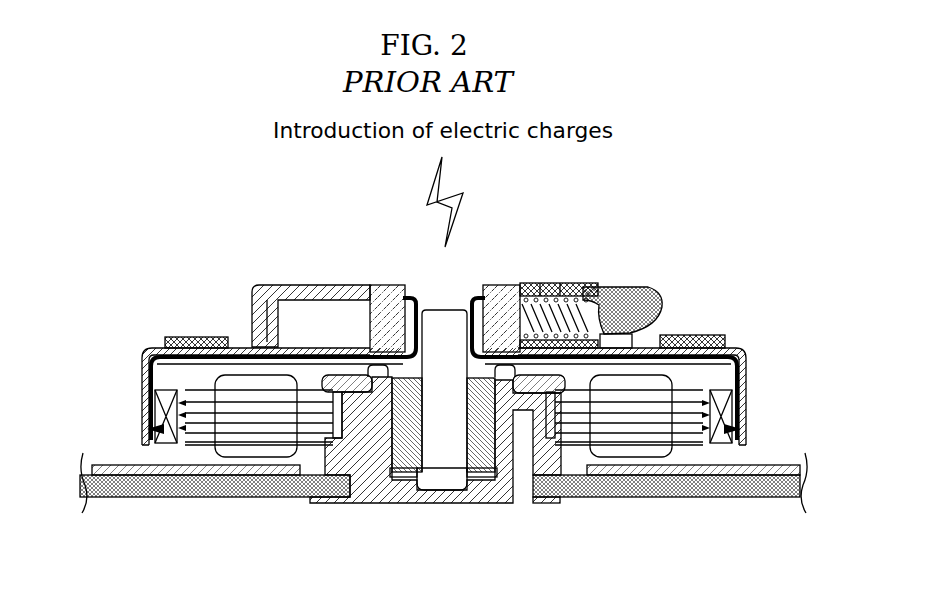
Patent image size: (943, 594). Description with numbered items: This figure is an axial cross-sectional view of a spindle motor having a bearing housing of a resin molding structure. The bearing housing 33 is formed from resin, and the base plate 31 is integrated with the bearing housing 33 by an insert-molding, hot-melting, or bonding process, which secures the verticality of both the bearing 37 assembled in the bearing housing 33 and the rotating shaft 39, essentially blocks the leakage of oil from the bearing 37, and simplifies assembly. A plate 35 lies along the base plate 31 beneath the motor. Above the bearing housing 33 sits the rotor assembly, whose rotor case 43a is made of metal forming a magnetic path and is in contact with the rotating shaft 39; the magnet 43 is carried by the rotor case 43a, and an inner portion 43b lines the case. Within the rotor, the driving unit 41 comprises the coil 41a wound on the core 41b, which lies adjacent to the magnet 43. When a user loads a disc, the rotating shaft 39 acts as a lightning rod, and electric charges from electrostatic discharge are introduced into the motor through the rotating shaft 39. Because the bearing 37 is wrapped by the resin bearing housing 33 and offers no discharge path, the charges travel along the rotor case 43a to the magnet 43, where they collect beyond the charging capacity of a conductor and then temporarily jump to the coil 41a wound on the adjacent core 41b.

The base plate 31 is at (196, 490).
The bearing housing 33 is at (373, 503).
The plate 35 is at (157, 475).
The bearing 37 is at (402, 350).
The rotating shaft 39 is at (452, 323).
The driving unit 41 is at (235, 285).
The coil 41a is at (196, 390).
The core 41b is at (233, 381).
The magnet 43 is at (73, 387).
The rotor case 43a is at (147, 399).
The inner conductive sheet 43b is at (150, 426).